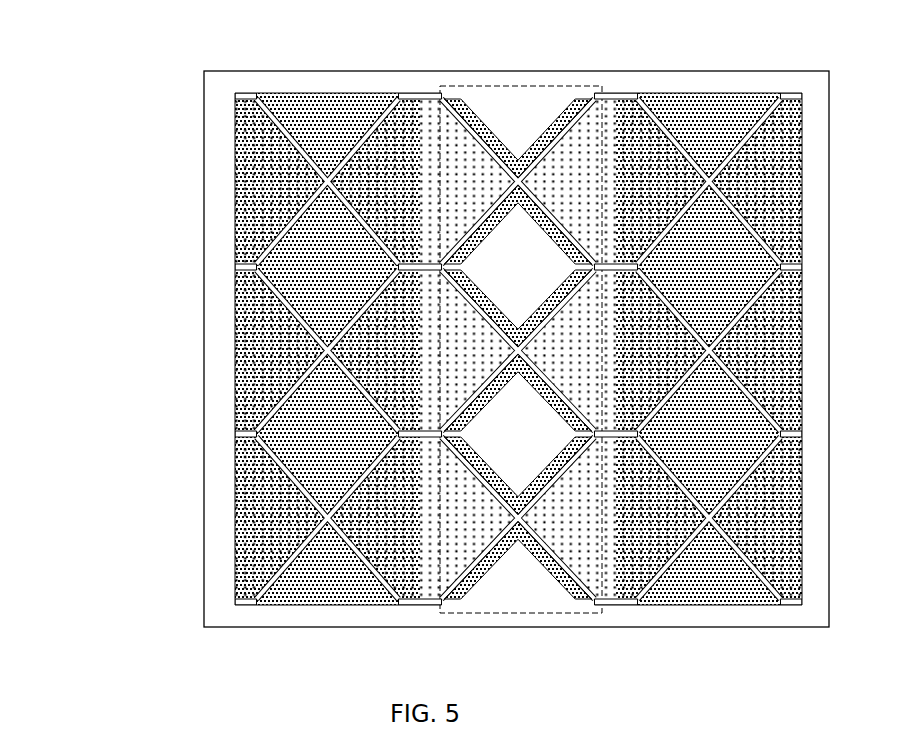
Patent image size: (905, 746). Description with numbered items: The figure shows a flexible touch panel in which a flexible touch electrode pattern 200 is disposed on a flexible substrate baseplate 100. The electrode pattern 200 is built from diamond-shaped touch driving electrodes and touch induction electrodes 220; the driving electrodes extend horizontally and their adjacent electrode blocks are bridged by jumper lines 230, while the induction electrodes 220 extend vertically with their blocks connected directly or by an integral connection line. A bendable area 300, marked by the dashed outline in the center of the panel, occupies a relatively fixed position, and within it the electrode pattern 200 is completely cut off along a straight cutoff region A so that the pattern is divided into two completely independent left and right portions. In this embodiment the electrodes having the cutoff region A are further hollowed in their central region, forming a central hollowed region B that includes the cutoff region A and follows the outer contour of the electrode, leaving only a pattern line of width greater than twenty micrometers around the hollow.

The flexible substrate baseplate 100 is at (648, 72).
The flexible touch electrode pattern 200 is at (468, 349).
The touch induction electrode 220 is at (265, 183).
The jumper line 230 is at (238, 430).
The bendable area 300 is at (522, 85).
The cutoff region A is at (518, 530).
The central hollowed region B is at (535, 430).